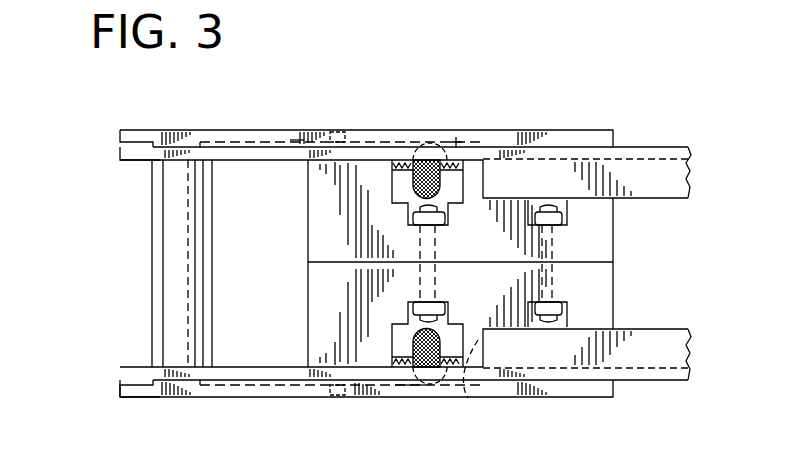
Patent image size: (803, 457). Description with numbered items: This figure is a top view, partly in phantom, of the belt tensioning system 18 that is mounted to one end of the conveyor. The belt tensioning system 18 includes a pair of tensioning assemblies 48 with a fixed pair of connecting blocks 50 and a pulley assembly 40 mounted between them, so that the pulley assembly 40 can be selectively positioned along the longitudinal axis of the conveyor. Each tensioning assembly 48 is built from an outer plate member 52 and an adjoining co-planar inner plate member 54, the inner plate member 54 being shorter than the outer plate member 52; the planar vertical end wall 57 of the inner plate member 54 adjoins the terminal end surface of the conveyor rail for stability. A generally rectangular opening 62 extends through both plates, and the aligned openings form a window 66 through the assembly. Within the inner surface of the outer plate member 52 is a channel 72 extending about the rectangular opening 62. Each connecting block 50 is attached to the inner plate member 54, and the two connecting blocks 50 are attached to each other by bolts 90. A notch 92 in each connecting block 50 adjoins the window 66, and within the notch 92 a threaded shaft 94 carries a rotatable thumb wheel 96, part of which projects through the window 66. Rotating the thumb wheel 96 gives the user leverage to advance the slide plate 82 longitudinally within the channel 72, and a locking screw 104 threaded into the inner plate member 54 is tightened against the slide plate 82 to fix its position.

The belt tensioning system 18 is at (96, 417).
The pulley assembly 40 is at (138, 283).
The tensioning assembly 48 is at (392, 124).
The connecting block 50 is at (598, 290).
The outer plate member 52 is at (540, 398).
The inner plate member 54 is at (132, 162).
The planar vertical end wall 57 is at (500, 142).
The rectangular opening 62 is at (405, 398).
The window 66 is at (462, 134).
The channel 72 is at (298, 140).
The slide plate 82 is at (238, 142).
The bolts 90 is at (442, 282).
The notch 92 is at (468, 398).
The threaded shaft 94 is at (398, 345).
The thumb wheel 96 is at (420, 165).
The locking screw 104 is at (338, 130).